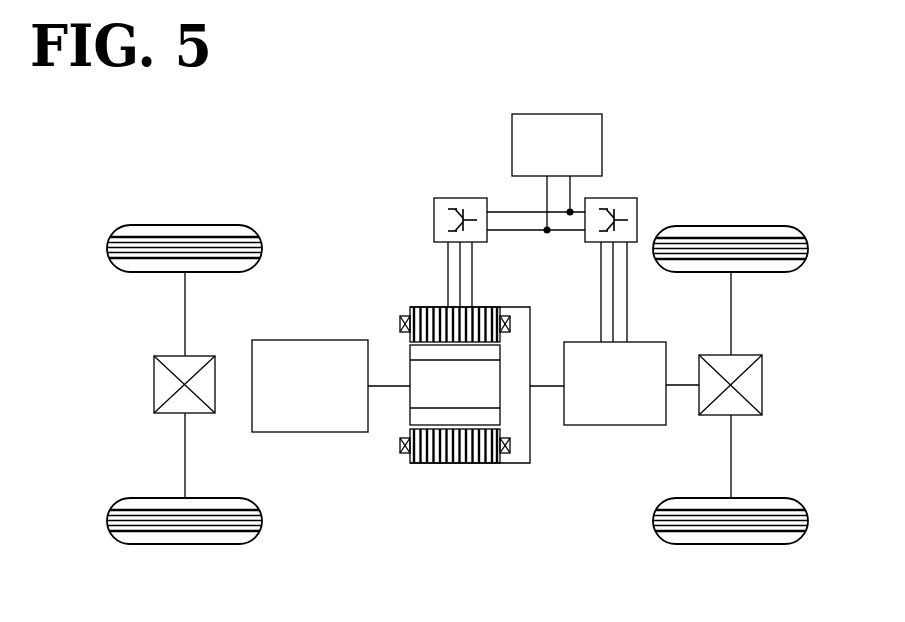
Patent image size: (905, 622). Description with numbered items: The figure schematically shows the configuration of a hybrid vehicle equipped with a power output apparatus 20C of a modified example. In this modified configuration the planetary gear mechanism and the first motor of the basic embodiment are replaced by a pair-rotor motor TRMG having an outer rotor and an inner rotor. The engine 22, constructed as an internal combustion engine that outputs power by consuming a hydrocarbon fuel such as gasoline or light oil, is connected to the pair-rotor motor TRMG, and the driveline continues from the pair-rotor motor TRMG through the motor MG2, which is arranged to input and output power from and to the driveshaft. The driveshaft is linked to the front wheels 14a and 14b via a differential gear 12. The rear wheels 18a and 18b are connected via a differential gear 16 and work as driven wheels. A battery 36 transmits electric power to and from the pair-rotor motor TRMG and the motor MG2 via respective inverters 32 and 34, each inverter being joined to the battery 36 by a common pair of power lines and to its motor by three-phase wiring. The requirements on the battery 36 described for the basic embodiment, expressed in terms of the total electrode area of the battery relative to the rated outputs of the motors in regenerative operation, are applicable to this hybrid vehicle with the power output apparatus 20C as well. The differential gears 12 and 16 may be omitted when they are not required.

The differential gear 12 is at (762, 380).
The front wheel 14a is at (731, 226).
The front wheel 14b is at (731, 545).
The differential gear 16 is at (154, 375).
The rear wheel 18a is at (185, 225).
The rear wheel 18b is at (185, 545).
The power output apparatus 20C is at (349, 187).
The engine 22 is at (310, 433).
The inverter 32 is at (447, 197).
The inverter 34 is at (611, 198).
The battery 36 is at (512, 143).
The pair-rotor motor TRMG is at (472, 465).
The motor MG2 is at (615, 427).